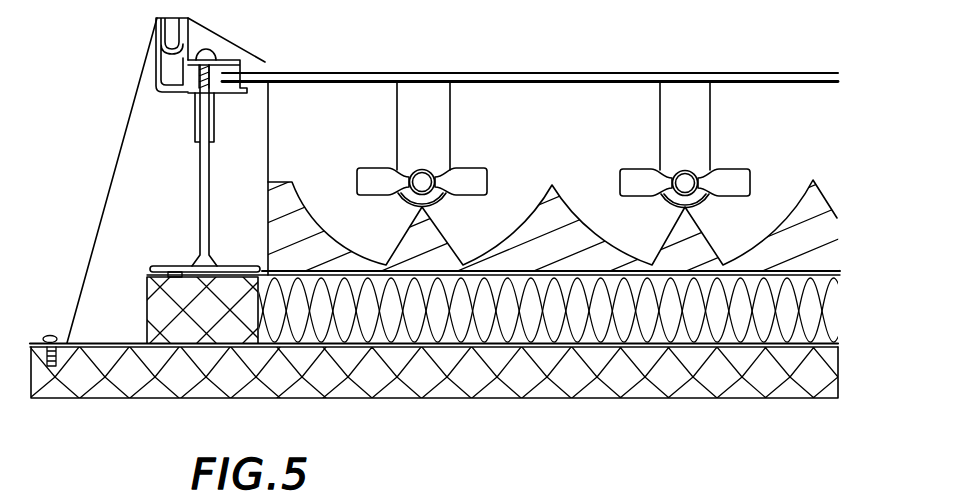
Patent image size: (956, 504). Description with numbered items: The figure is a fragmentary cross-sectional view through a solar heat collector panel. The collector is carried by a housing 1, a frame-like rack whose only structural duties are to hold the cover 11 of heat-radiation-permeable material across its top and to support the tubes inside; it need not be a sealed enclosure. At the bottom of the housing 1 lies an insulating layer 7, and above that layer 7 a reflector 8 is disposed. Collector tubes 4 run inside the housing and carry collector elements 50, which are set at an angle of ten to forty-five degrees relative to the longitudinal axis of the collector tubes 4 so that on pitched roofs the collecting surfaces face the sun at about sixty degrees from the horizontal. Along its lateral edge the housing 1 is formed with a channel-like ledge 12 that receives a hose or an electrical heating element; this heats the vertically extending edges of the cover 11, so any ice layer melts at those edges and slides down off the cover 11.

The housing 1 is at (108, 193).
The channel-like ledge 12 is at (163, 52).
The cover 11 is at (810, 80).
The collector tube 4 is at (725, 145).
The collector element 50 is at (742, 178).
The reflector 8 is at (800, 214).
The insulating layer 7 is at (800, 305).